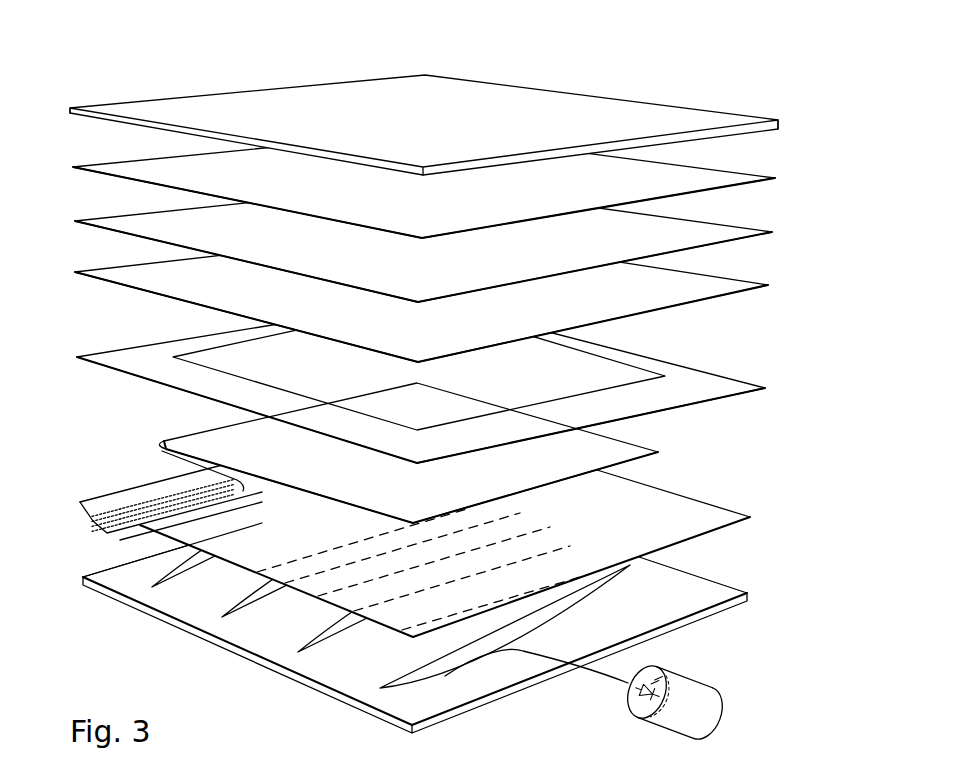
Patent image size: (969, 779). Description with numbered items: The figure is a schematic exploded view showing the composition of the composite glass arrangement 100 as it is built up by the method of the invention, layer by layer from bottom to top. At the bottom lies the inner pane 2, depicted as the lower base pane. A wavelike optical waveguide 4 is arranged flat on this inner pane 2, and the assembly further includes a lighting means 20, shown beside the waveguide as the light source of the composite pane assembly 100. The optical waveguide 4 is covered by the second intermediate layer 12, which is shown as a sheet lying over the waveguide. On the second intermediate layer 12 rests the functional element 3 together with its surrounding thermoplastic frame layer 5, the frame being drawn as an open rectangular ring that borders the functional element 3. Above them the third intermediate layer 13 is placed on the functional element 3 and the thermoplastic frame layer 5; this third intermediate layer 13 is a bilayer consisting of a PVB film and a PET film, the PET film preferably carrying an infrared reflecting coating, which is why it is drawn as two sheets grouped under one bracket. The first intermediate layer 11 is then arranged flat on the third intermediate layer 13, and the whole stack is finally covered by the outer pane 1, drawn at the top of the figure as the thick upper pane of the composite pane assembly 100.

The composite pane assembly 100 is at (451, 382).
The outer pane 1 is at (722, 120).
The first intermediate layer 11 is at (720, 180).
The third intermediate layer 13 is at (786, 232).
The thermoplastic frame layer 5 is at (705, 368).
The functional element 3 is at (602, 450).
The second intermediate layer 12 is at (693, 518).
The inner pane 2 is at (690, 593).
The optical waveguide 4 is at (602, 677).
The lighting means 20 is at (682, 675).